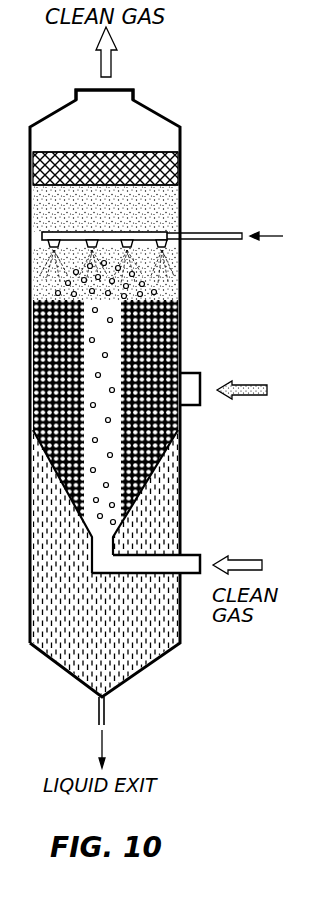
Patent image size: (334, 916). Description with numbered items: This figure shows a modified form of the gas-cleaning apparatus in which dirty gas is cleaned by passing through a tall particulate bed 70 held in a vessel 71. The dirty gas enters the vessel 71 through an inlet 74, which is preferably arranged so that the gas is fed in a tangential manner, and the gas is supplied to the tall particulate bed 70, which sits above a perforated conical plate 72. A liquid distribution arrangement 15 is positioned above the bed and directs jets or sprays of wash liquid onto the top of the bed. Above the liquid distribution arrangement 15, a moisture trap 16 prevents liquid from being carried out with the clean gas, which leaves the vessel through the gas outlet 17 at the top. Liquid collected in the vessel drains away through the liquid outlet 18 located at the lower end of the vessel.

The gas outlet 17 is at (113, 97).
The moisture trap 16 is at (160, 170).
The liquid distribution arrangement 15 is at (142, 231).
The vessel 71 is at (180, 283).
The tall particulate bed 70 is at (157, 318).
The inlet 74 is at (183, 373).
The perforated conical plate 72 is at (140, 488).
The liquid outlet 18 is at (99, 712).